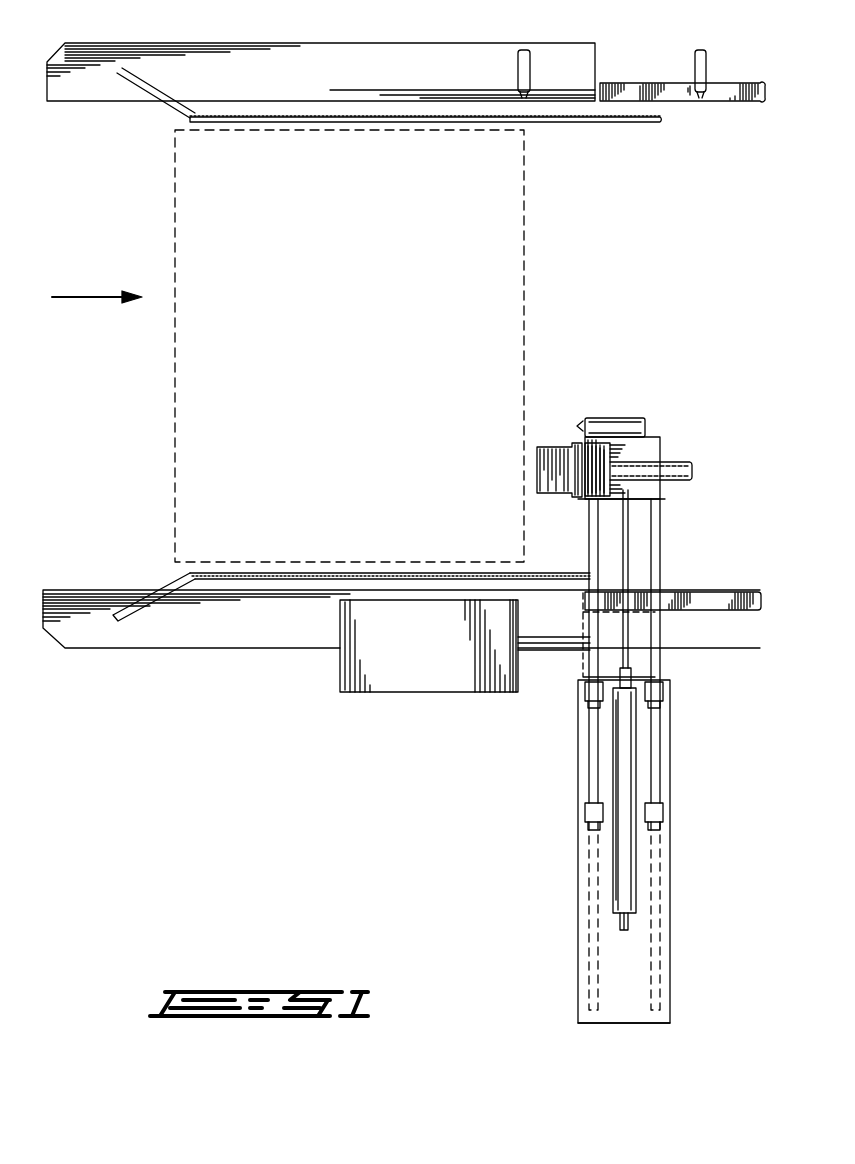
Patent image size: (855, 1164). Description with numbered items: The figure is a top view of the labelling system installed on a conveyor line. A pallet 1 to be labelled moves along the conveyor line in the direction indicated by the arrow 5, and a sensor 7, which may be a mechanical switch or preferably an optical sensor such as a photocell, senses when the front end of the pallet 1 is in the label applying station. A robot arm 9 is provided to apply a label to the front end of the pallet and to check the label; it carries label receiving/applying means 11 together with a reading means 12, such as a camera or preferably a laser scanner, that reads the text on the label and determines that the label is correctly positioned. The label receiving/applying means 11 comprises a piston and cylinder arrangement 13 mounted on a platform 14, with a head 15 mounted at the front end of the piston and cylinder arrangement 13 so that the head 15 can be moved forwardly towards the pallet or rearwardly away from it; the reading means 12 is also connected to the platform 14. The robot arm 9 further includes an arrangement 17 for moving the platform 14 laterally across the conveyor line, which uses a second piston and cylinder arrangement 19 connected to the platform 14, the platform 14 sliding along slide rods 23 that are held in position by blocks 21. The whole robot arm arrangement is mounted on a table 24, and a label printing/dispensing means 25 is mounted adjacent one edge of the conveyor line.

The pallet 1 is at (360, 297).
The arrow 5 is at (91, 296).
The sensor 7 is at (522, 70).
The robot arm 9 is at (683, 714).
The label receiving/applying means 11 is at (663, 440).
The reading means 12 is at (601, 424).
The piston and cylinder arrangement 13 is at (596, 478).
The platform 14 is at (652, 484).
The head 15 is at (548, 446).
The arrangement for moving the platform laterally 17 is at (632, 974).
The piston and cylinder arrangement 19 is at (625, 770).
The blocks 21 is at (588, 693).
The slide rods 23 is at (590, 762).
The table 24 is at (630, 1016).
The label printing/dispensing means 25 is at (438, 656).